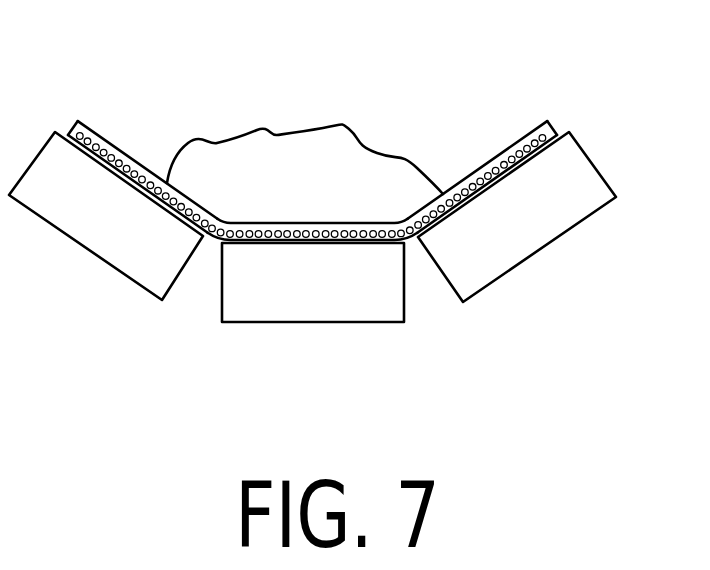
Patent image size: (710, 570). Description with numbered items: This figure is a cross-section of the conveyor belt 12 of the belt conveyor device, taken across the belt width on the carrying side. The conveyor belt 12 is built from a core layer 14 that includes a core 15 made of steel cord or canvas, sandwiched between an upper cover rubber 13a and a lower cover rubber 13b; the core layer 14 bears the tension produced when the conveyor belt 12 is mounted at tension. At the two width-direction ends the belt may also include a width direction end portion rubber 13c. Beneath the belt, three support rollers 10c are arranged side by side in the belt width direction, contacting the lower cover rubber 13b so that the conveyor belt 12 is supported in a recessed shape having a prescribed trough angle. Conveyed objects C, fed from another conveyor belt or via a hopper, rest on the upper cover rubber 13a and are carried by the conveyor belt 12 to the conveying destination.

The support rollers 10c is at (105, 232).
The conveyor belt 12 is at (347, 180).
The upper cover rubber 13a is at (190, 195).
The lower cover rubber 13b is at (246, 242).
The width direction end portion rubber 13c is at (67, 128).
The core layer 14 is at (483, 172).
The core 15 is at (345, 232).
The conveyed objects C is at (278, 150).